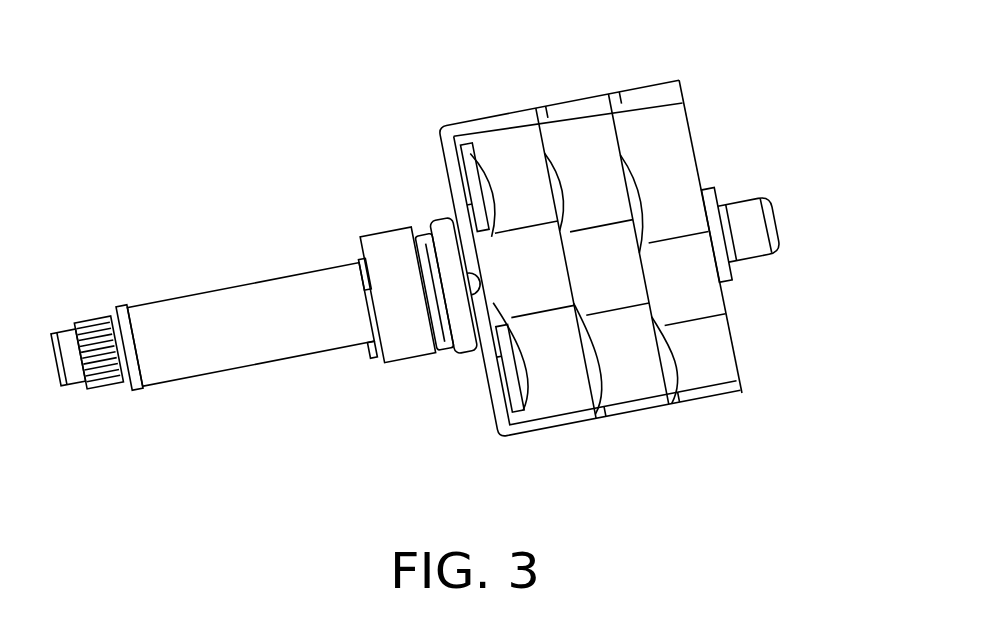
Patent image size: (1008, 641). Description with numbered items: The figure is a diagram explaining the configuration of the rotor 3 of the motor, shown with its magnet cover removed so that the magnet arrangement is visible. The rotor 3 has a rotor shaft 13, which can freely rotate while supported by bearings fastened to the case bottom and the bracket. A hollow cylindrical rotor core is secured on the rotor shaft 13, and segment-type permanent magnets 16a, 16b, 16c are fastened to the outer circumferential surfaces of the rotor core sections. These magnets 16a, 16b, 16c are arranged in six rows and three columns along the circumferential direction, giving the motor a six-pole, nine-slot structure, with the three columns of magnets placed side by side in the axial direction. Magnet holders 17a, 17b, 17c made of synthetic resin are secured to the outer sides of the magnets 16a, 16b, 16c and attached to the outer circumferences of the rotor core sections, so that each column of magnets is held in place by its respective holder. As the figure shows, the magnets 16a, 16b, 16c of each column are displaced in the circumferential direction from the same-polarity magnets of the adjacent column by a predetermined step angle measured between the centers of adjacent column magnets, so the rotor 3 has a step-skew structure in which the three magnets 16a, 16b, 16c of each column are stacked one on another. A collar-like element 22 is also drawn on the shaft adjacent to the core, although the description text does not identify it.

The rotor 3 is at (337, 128).
The rotor shaft 13 is at (250, 357).
The collar 22 is at (410, 340).
The segment-type magnet 16a is at (480, 133).
The segment-type magnet 16b is at (563, 130).
The segment-type magnet 16c is at (670, 150).
The magnet holder 17a is at (527, 245).
The magnet holder 17b is at (608, 245).
The magnet holder 17c is at (657, 100).